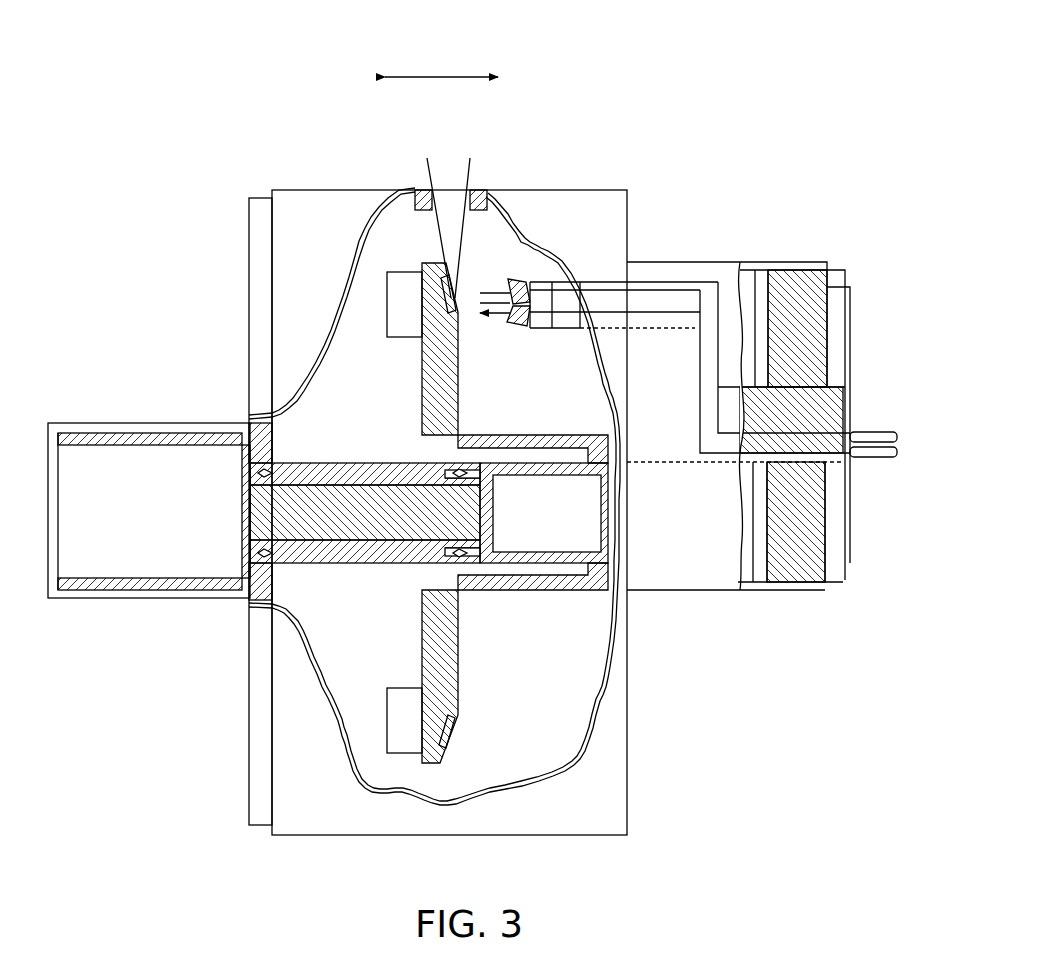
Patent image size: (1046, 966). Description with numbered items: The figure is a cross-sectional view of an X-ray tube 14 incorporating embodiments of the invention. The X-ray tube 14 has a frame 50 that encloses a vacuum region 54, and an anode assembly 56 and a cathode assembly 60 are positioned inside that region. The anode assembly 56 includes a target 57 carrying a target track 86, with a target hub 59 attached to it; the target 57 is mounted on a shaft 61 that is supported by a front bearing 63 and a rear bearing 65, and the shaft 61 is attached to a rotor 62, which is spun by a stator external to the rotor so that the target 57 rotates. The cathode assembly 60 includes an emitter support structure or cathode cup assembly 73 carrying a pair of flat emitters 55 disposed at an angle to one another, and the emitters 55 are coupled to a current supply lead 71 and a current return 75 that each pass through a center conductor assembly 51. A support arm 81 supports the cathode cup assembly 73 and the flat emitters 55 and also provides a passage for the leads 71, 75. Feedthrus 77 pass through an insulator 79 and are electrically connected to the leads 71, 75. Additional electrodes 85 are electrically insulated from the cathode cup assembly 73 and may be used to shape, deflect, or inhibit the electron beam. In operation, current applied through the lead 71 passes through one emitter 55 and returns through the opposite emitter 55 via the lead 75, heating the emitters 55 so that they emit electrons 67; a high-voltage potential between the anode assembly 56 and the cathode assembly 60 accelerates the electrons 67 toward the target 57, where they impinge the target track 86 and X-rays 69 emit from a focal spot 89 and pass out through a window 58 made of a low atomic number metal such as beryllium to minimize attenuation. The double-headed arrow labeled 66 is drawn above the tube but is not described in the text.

The X-ray tube 14 is at (843, 636).
The frame 50 is at (388, 188).
The center conductor assembly 51 is at (740, 470).
The vacuum region 54 is at (583, 647).
The flat emitters 55 is at (527, 280).
The anode assembly 56 is at (540, 605).
The target 57 is at (458, 663).
The window 58 is at (450, 185).
The target hub 59 is at (542, 592).
The cathode assembly 60 is at (573, 360).
The shaft 61 is at (333, 565).
The rotor 62 is at (92, 600).
The front bearing 63 is at (445, 562).
The rear bearing 65 is at (245, 598).
The direction of movement 66 is at (436, 75).
The electrons 67 is at (452, 300).
The X-rays 69 is at (437, 240).
The current supply lead 71 is at (700, 425).
The cathode cup assembly 73 is at (552, 280).
The current return 75 is at (690, 282).
The feedthrus 77 is at (900, 445).
The insulator 79 is at (848, 326).
The support arm 81 is at (655, 275).
The electrodes 85 is at (510, 282).
The target track 86 is at (425, 337).
The focal spot 89 is at (442, 292).